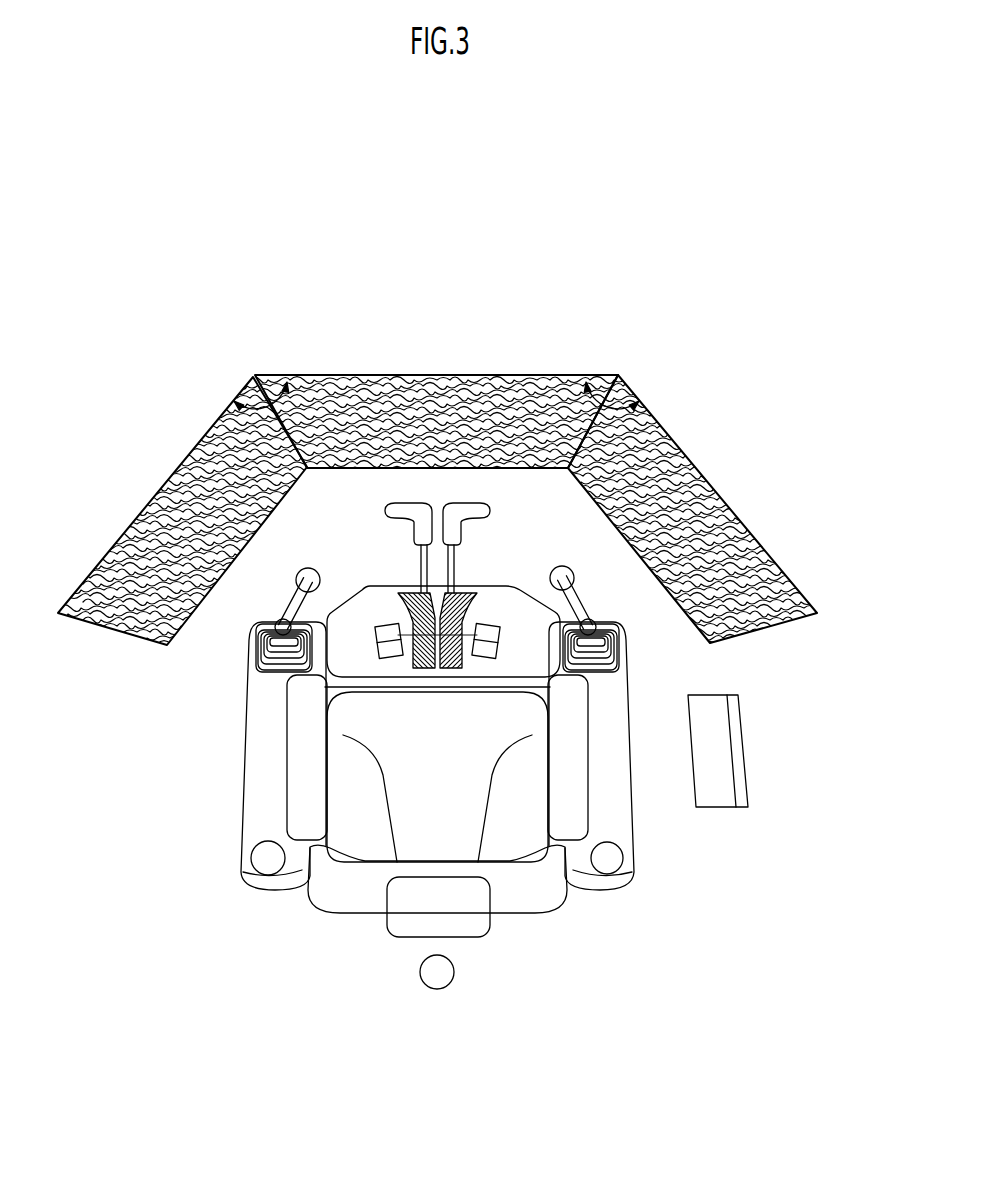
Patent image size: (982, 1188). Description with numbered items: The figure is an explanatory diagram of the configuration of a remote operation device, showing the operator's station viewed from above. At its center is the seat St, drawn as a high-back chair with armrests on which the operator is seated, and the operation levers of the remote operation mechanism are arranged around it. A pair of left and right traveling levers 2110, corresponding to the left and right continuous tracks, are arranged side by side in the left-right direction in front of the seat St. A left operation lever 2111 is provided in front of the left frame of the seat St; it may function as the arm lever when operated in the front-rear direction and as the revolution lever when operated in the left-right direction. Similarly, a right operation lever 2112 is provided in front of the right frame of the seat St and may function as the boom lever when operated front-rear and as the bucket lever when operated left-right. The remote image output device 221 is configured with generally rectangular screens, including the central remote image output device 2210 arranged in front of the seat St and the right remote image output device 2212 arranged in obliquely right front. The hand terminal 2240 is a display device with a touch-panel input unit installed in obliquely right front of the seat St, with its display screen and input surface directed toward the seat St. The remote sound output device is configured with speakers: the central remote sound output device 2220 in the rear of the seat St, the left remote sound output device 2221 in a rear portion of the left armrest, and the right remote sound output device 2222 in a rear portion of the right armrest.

The remote image output device 221 is at (499, 408).
The central remote image output device 2210 is at (428, 347).
The right remote image output device 2212 is at (723, 460).
The traveling levers 2110 is at (470, 482).
The left operation lever 2111 is at (307, 548).
The right operation lever 2112 is at (569, 548).
The seat St is at (359, 808).
The central remote sound output device 2220 is at (475, 972).
The left remote sound output device 2221 is at (234, 858).
The right remote sound output device 2222 is at (641, 858).
The hand terminal 2240 is at (760, 770).